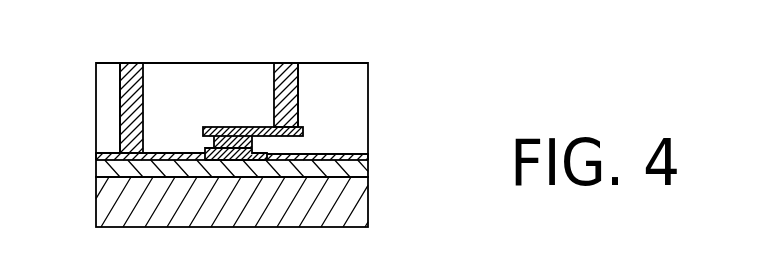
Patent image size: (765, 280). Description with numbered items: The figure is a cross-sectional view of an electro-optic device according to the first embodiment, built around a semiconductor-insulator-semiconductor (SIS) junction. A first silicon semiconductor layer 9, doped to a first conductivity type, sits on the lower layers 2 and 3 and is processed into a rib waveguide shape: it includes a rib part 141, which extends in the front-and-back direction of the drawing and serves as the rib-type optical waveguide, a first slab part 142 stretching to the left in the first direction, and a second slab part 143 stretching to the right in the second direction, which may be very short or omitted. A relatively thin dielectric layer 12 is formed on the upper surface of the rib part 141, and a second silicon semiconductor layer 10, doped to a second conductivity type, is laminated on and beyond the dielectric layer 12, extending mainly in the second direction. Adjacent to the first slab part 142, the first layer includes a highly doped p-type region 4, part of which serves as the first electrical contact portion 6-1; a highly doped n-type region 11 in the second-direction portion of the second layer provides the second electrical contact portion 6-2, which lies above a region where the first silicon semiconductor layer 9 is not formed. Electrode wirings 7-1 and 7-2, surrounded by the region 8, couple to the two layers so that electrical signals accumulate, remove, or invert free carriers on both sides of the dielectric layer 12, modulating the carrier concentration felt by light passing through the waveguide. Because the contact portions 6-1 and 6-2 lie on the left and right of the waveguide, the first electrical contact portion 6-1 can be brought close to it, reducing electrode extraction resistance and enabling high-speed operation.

The buffer layer 2 is at (360, 172).
The substrate 3 is at (227, 207).
The p-type region 4 is at (105, 159).
The first electrical contact portion 6-1 is at (118, 150).
The second electrical contact portion 6-2 is at (298, 107).
The electrode wiring 7-1 is at (126, 63).
The electrode wiring 7-2 is at (287, 63).
The sealing resin 8 is at (210, 70).
The first silicon semiconductor layer 9 is at (172, 157).
The second silicon semiconductor layer 10 is at (232, 128).
The n-type region 11 is at (303, 131).
The dielectric layer 12 is at (220, 145).
The rib part 141 is at (237, 152).
The first slab part 142 is at (187, 152).
The second slab part 143 is at (246, 152).